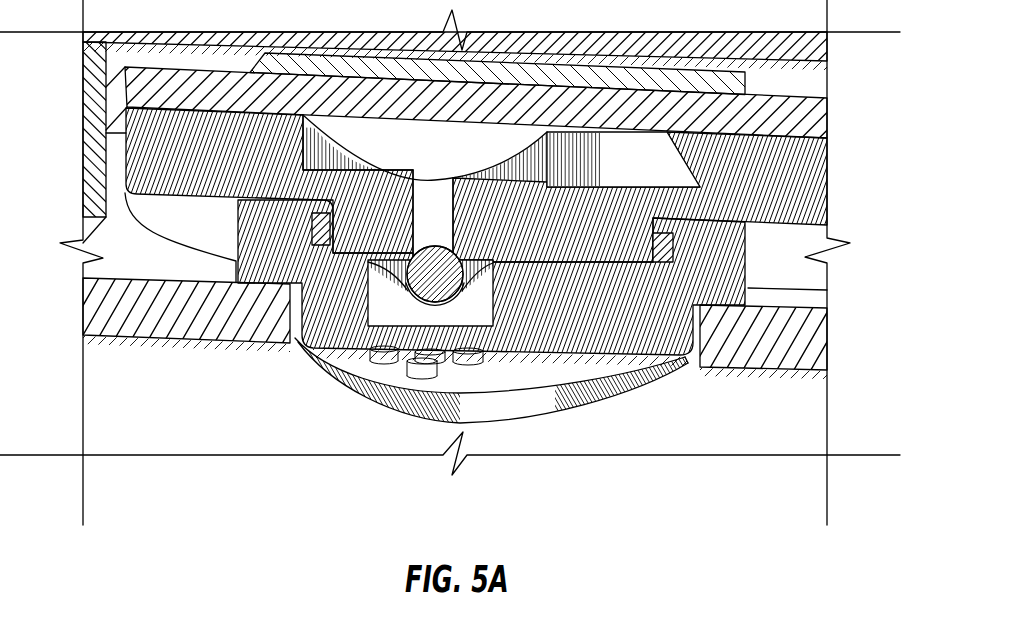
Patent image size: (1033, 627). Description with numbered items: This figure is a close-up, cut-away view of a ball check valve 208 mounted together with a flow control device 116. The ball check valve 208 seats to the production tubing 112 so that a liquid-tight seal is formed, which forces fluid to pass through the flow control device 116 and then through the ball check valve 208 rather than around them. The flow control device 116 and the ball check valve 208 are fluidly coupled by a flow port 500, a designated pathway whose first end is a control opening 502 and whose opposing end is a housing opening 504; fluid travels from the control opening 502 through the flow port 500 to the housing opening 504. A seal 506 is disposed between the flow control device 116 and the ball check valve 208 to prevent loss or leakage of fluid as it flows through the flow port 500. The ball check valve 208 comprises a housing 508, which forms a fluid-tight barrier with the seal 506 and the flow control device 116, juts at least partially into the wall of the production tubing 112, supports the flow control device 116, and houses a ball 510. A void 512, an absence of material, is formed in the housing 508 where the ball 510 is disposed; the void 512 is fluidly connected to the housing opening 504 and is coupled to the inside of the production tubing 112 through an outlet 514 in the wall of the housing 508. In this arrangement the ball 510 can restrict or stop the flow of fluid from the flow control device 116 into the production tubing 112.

The production tubing 112 is at (824, 349).
The flow control device 116 is at (824, 180).
The ball check valve 208 is at (692, 372).
The flow port 500 is at (454, 198).
The control opening 502 is at (436, 172).
The housing opening 504 is at (433, 238).
The seal 506 is at (322, 238).
The housing 508 is at (617, 354).
The ball 510 is at (460, 288).
The void 512 is at (463, 327).
The outlet 514 is at (383, 360).